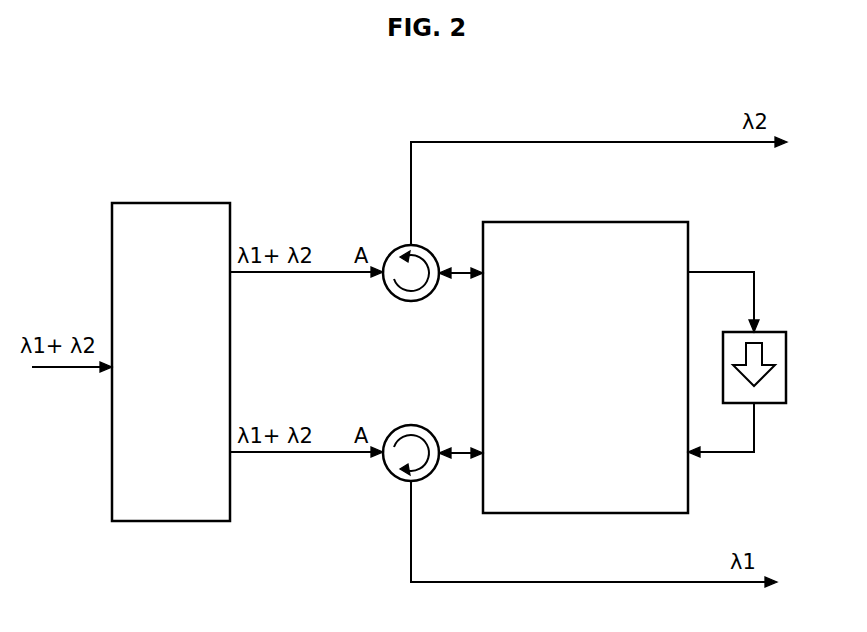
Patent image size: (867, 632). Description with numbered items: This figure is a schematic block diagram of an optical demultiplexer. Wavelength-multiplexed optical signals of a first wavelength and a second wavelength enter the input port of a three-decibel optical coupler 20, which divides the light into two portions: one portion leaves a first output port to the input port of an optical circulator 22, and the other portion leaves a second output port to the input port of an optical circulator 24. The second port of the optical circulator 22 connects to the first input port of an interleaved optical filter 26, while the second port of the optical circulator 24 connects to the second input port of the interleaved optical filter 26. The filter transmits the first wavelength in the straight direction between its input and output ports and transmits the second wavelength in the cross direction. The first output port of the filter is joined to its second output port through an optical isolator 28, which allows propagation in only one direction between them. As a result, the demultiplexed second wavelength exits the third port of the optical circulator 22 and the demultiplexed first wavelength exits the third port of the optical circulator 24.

The 3 dB optical coupler 20 is at (172, 212).
The optical circulator 22 is at (410, 302).
The optical circulator 24 is at (409, 425).
The interleaved optical filter 26 is at (580, 230).
The optical isolator 28 is at (787, 357).